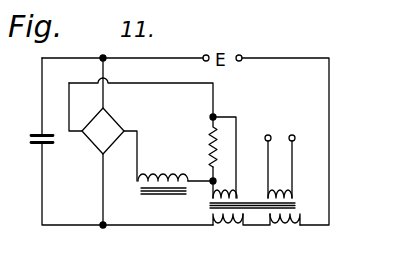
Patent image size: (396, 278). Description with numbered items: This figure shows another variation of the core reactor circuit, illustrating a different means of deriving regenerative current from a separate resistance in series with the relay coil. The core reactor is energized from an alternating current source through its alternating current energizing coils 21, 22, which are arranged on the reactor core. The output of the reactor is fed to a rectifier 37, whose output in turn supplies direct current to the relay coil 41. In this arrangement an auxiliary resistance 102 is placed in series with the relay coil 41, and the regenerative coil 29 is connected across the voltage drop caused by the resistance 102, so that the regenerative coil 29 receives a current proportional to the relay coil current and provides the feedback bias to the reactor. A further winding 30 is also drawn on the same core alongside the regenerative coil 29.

The rectifier 37 is at (123, 127).
The relay coil 41 is at (157, 177).
The auxiliary resistance 102 is at (214, 150).
The regenerative coil 29 is at (228, 188).
The primary winding 30 is at (277, 190).
The alternating current energizing coil 22 is at (233, 228).
The alternating current energizing coil 21 is at (288, 227).